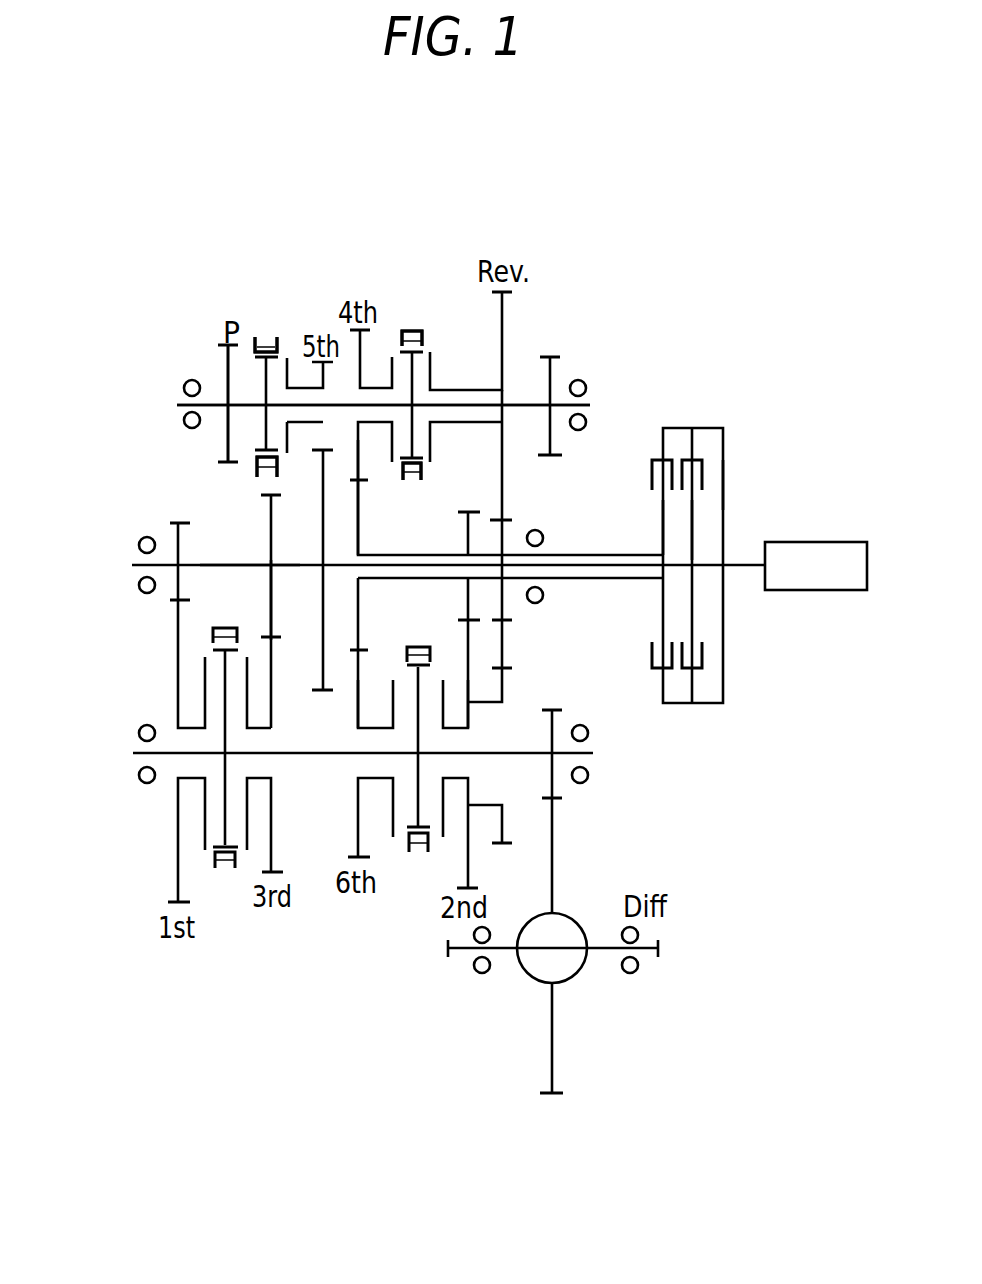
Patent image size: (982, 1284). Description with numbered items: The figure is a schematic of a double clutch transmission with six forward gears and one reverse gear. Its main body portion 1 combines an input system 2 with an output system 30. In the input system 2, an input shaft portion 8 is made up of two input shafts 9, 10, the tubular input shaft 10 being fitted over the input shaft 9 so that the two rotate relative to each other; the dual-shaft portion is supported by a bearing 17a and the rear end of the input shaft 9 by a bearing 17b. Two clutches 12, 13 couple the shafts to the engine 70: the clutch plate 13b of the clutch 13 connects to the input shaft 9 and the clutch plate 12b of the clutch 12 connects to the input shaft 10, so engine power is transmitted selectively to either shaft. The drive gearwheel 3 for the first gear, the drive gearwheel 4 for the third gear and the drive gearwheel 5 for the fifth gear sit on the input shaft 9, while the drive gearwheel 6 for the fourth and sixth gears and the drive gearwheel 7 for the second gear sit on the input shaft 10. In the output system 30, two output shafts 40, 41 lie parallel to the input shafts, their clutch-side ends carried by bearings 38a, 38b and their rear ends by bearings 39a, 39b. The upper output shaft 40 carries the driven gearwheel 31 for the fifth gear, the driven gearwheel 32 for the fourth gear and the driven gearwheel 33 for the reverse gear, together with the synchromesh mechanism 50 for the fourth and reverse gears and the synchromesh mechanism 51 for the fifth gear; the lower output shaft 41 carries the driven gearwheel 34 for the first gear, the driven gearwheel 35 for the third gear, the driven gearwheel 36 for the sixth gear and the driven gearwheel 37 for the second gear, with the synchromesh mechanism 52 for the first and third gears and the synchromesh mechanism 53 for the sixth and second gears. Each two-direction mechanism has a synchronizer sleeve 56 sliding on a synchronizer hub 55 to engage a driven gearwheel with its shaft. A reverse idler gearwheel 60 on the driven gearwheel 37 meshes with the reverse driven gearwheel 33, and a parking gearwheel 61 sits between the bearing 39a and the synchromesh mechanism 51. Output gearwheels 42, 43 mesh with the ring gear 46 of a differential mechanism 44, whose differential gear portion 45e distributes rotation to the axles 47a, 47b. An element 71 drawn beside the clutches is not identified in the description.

The main body portion 1 is at (132, 390).
The input system 2 is at (684, 397).
The drive gearwheel for the first gear 3 is at (177, 590).
The drive gearwheel for the third gear 4 is at (272, 582).
The drive gearwheel for the fifth gear 5 is at (323, 650).
The drive gearwheel for the fourth and sixth gears 6 is at (360, 515).
The drive gearwheel for the second gear 7 is at (463, 535).
The input shaft portion 8 is at (597, 580).
The input shaft 9 is at (247, 565).
The input shaft 10 is at (438, 552).
The clutch 12 is at (652, 462).
The clutch plate 12b is at (662, 523).
The clutch 13 is at (707, 450).
The clutch plate 13b is at (693, 535).
The bearing 17a is at (538, 528).
The bearing 17b is at (137, 543).
The output system 30 is at (197, 270).
The driven gearwheel for the fifth gear 31 is at (317, 432).
The driven gearwheel for the fourth gear 32 is at (372, 362).
The driven gearwheel for the reverse gear 33 is at (507, 318).
The driven gearwheel for the first gear 34 is at (177, 860).
The driven gearwheel for the third gear 35 is at (275, 803).
The driven gearwheel for the sixth gear 36 is at (357, 827).
The driven gearwheel for the second gear 37 is at (468, 858).
The bearing 38a is at (587, 388).
The bearing 38b is at (587, 783).
The bearing 39a is at (190, 380).
The bearing 39b is at (145, 783).
The output shaft 40 is at (536, 402).
The output shaft 41 is at (537, 752).
The output gearwheel 42 is at (556, 370).
The output gearwheel 43 is at (562, 712).
The differential mechanism 44 is at (530, 990).
The differential gear portion 45e is at (570, 982).
The ring gear 46 is at (553, 1075).
The axle 47a is at (462, 952).
The axle 47b is at (648, 952).
The synchromesh mechanism 50 is at (413, 313).
The synchromesh mechanism 51 is at (262, 320).
The synchromesh mechanism 52 is at (223, 880).
The synchromesh mechanism 53 is at (418, 862).
The synchronizer hub 55 is at (262, 437).
The synchronizer sleeve 56 is at (278, 337).
The reverse idler gearwheel 60 is at (504, 685).
The parking gearwheel 61 is at (227, 440).
The engine 70 is at (843, 542).
The clutch housing 71 is at (726, 480).